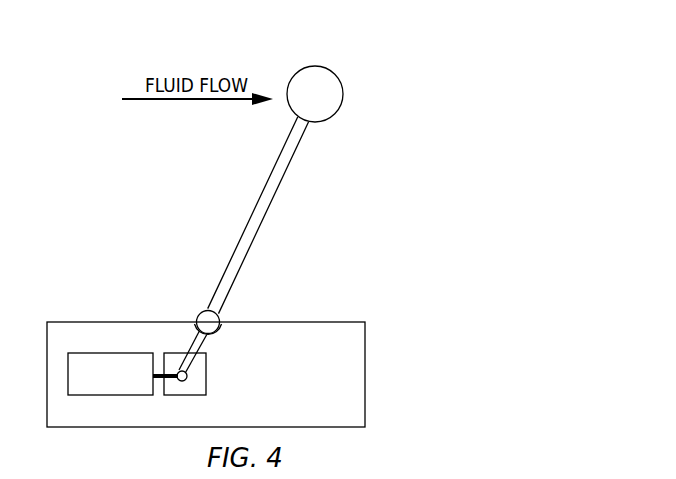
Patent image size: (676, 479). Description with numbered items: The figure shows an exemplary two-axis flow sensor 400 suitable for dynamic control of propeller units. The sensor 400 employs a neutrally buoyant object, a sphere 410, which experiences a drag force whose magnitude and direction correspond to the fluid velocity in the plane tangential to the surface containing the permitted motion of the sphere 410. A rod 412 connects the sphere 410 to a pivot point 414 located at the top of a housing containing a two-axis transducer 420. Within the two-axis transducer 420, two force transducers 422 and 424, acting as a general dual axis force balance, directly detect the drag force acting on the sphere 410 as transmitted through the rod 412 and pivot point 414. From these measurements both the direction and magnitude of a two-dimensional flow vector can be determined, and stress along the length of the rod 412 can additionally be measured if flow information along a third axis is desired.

The sensor 400 is at (91, 126).
The sphere 410 is at (331, 104).
The rod 412 is at (256, 207).
The pivot point 414 is at (197, 313).
The two-axis transducer 420 is at (280, 410).
The force transducer 422 is at (95, 385).
The force transducer 424 is at (185, 397).